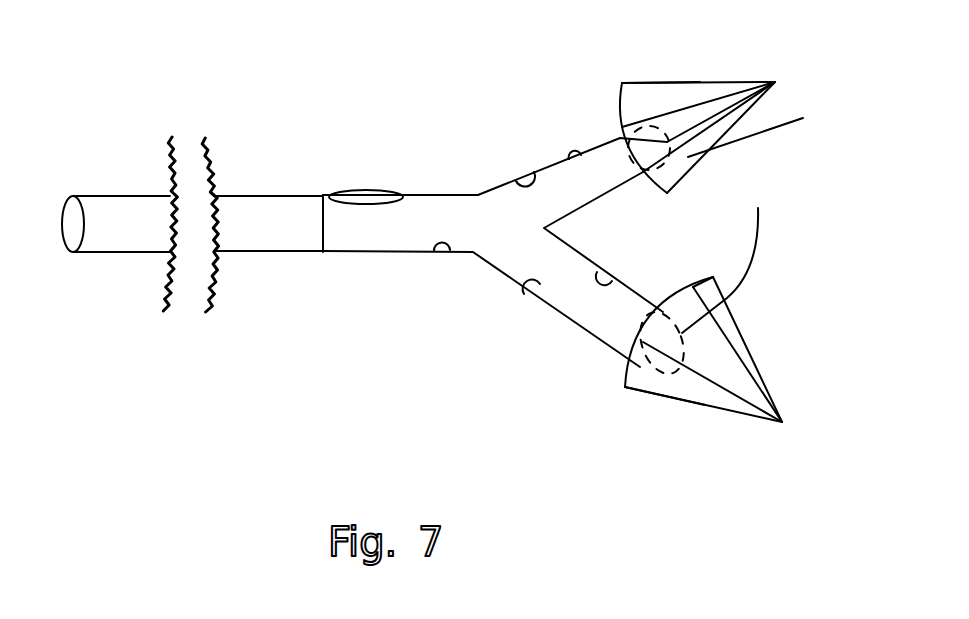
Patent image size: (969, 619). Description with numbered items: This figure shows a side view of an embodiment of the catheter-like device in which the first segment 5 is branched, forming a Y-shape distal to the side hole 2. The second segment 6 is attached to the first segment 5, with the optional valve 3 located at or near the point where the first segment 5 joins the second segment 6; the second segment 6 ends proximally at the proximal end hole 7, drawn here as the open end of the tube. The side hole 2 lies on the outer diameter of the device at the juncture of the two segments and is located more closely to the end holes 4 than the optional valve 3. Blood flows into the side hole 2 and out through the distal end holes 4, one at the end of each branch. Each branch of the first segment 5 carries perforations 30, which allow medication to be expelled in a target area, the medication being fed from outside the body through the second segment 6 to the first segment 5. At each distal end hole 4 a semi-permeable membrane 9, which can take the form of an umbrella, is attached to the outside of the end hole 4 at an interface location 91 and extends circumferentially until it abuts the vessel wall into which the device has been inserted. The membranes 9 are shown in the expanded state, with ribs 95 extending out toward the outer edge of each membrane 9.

The side hole 2 is at (368, 190).
The valve 3 is at (322, 225).
The distal end hole 4 is at (756, 219).
The first segment 5 is at (357, 248).
The second segment 6 is at (128, 196).
The proximal end hole 7 is at (75, 230).
The semi-permeable membrane 9 is at (687, 100).
The perforations 30 is at (523, 172).
The interface location 91 is at (626, 153).
The ribs 95 is at (640, 83).